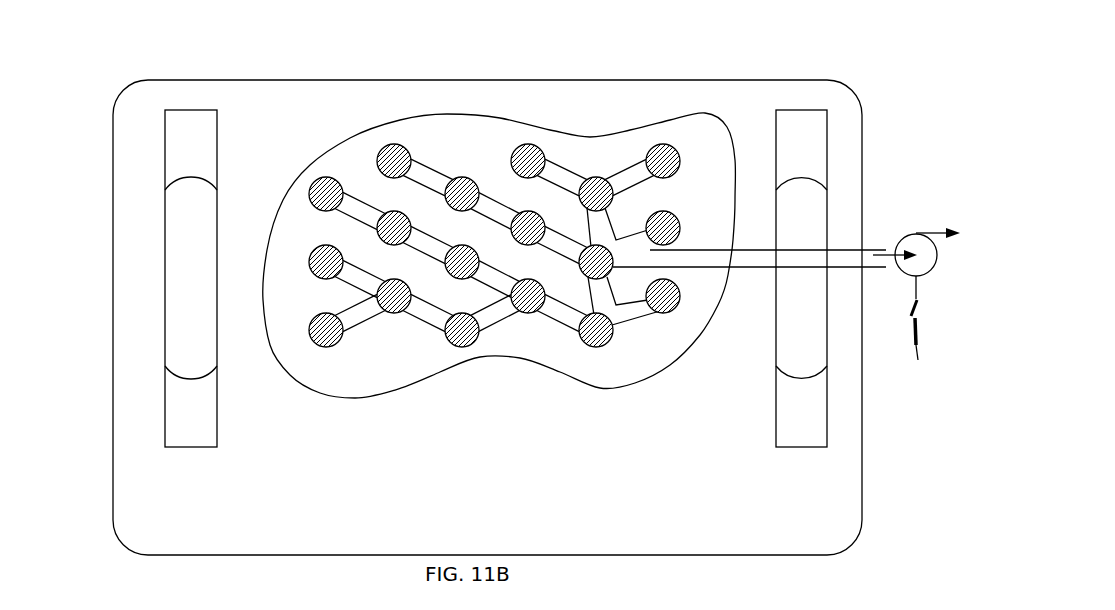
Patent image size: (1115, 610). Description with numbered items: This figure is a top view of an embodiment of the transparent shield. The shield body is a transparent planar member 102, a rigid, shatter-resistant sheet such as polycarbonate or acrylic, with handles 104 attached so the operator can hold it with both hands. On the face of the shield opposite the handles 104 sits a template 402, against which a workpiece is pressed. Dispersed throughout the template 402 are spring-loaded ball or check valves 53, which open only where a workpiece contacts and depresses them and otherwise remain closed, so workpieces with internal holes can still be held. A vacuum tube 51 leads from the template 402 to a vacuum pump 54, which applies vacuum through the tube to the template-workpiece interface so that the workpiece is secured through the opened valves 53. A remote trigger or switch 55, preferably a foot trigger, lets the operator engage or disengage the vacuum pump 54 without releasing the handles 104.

The transparent planar member 102 is at (275, 98).
The handles 104 is at (190, 232).
The template 402 is at (717, 172).
The check valves 53 is at (548, 133).
The vacuum tube 51 is at (852, 253).
The vacuum pump 54 is at (916, 233).
The switch 55 is at (918, 360).